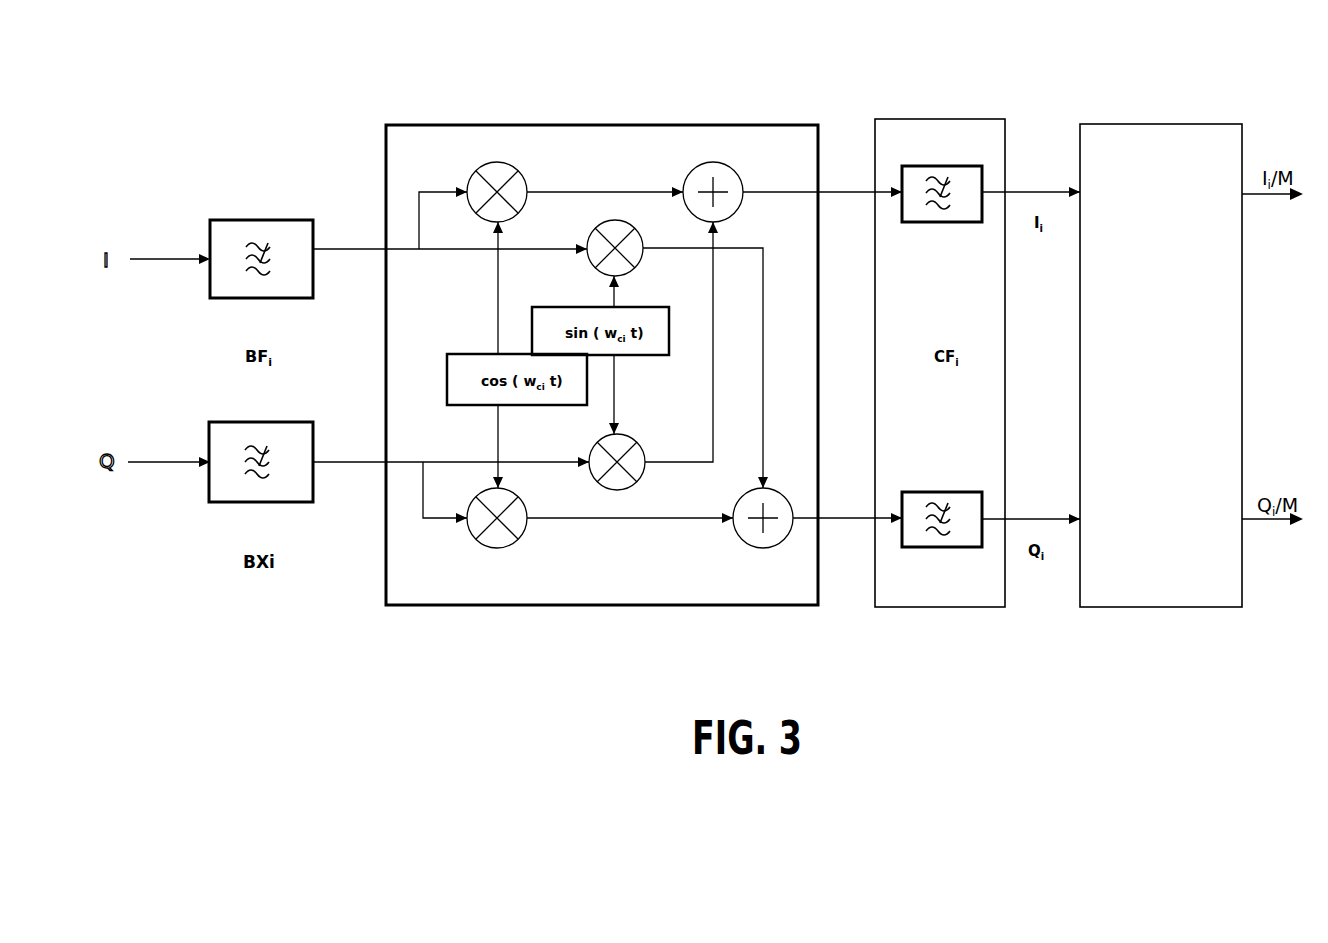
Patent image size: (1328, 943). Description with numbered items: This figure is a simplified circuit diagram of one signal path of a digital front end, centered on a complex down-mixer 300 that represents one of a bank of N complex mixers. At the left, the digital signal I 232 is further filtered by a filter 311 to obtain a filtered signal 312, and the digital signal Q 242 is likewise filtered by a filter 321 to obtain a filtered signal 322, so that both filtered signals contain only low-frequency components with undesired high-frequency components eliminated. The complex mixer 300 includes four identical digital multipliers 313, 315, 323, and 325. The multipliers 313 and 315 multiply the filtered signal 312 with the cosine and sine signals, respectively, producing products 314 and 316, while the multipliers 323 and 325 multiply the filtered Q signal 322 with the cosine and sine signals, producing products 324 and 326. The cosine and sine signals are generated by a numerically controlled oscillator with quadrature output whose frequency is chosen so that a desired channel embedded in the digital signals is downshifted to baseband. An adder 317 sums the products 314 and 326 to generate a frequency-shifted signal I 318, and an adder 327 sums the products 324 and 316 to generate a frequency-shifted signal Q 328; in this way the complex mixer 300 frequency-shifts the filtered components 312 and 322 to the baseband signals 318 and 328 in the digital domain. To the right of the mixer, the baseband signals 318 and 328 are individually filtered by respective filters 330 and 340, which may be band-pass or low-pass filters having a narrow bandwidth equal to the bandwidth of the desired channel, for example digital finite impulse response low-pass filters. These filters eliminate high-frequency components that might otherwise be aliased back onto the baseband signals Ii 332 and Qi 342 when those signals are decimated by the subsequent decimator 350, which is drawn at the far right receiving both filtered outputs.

The complex mixer 300 is at (687, 125).
The digital signal I 232 is at (170, 248).
The digital signal Q 242 is at (169, 451).
The filter 311 is at (261, 247).
The filtered signal 312 is at (450, 220).
The multiplier 313 is at (497, 184).
The product 314 is at (605, 184).
The multiplier 315 is at (629, 259).
The product 316 is at (724, 368).
The adder 317 is at (713, 192).
The frequency-shifted signal I 318 is at (822, 183).
The filter 321 is at (261, 450).
The filtered signal 322 is at (451, 479).
The multiplier 323 is at (497, 530).
The product 324 is at (630, 508).
The multiplier 325 is at (626, 451).
The product 326 is at (681, 342).
The adder 327 is at (763, 530).
The frequency-shifted signal Q 328 is at (847, 509).
The filter 330 is at (942, 180).
The baseband signal Ii 332 is at (1031, 183).
The filter 340 is at (942, 506).
The baseband signal Qi 342 is at (1031, 510).
The decimator 350 is at (1161, 365).